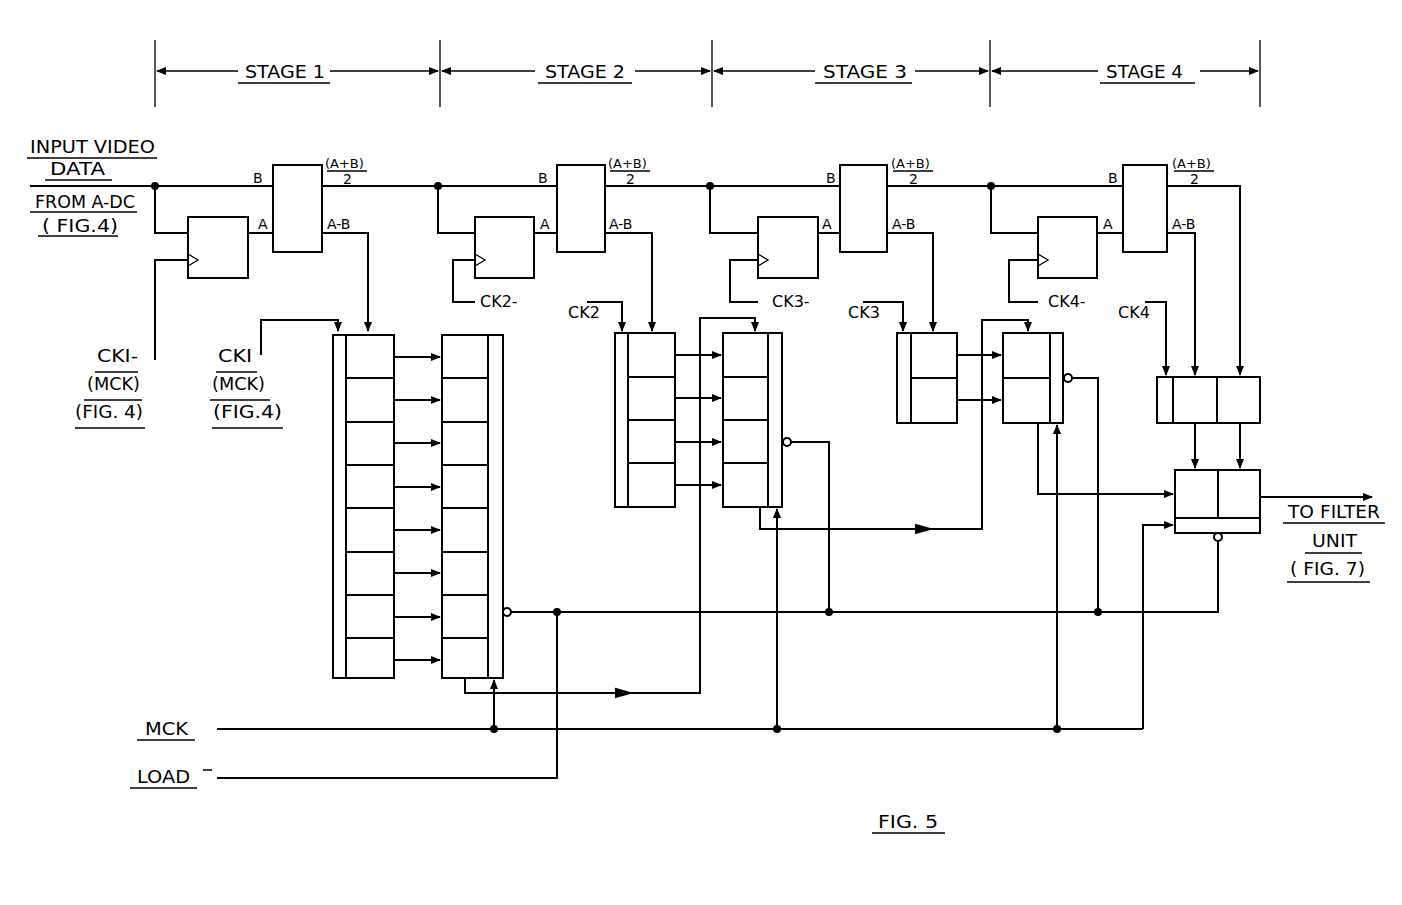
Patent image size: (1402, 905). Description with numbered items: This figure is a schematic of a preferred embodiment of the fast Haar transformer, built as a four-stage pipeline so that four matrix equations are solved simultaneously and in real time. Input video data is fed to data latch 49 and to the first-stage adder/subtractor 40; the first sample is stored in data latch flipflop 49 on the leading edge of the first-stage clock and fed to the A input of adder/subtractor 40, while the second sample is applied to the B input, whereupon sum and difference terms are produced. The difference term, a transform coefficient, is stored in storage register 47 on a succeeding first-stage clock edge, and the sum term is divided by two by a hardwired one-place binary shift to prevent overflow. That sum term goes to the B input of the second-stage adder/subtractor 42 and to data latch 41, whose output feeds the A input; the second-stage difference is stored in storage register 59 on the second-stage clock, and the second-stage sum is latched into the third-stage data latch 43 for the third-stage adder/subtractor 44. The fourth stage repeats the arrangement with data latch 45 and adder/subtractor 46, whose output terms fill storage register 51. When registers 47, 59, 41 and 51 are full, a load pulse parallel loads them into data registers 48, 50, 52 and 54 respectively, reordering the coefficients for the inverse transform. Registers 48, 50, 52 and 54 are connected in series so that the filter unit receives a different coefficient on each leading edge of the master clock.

The adder/subtractor 40 is at (287, 180).
The data latch 41 is at (520, 262).
The adder/subtractor 42 is at (577, 180).
The data latch 43 is at (808, 262).
The adder/subtractor 44 is at (857, 180).
The data latch 45 is at (1085, 262).
The adder/subtractor 46 is at (1140, 180).
The storage register 47 is at (357, 527).
The data register 48 is at (478, 530).
The data latch flipflop 49 is at (220, 262).
The data register 50 is at (757, 405).
The storage register 51 is at (1250, 402).
The data register 52 is at (1018, 415).
The data register 54 is at (1250, 478).
The storage register 59 is at (634, 403).